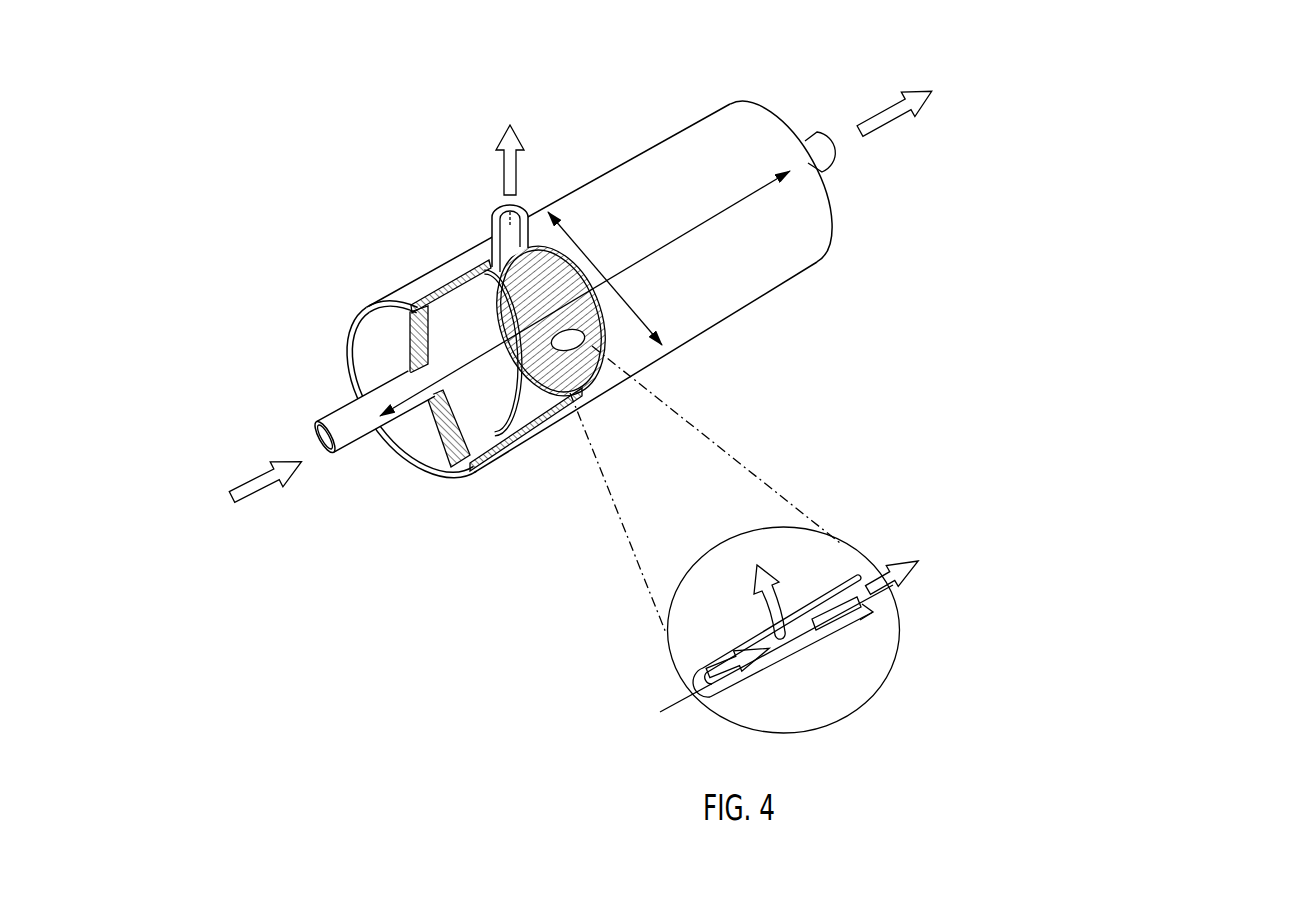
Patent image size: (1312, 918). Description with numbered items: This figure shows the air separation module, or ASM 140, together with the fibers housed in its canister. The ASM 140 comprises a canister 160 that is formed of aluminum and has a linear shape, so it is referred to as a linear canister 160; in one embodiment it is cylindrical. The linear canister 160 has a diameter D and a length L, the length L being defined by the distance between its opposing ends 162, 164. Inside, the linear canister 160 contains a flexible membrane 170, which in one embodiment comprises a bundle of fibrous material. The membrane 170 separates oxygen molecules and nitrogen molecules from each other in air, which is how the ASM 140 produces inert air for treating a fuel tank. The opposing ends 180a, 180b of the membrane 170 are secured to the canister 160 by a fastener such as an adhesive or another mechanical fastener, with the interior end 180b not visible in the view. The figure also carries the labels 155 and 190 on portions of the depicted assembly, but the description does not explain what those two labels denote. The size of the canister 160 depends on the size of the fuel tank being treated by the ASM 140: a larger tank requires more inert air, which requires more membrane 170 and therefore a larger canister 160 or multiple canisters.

The air separation module 140 is at (198, 163).
The housing shell / membrane wall 155 is at (436, 474).
The linear canister 160 is at (650, 211).
The end of canister 162 is at (348, 387).
The end of canister 164 is at (769, 106).
The flexible membrane 170 is at (593, 374).
The end of membrane 180a is at (410, 357).
The end of membrane 180b is at (805, 236).
The housing wall cut section 190 is at (530, 437).
The length L is at (463, 356).
The diameter D is at (570, 230).